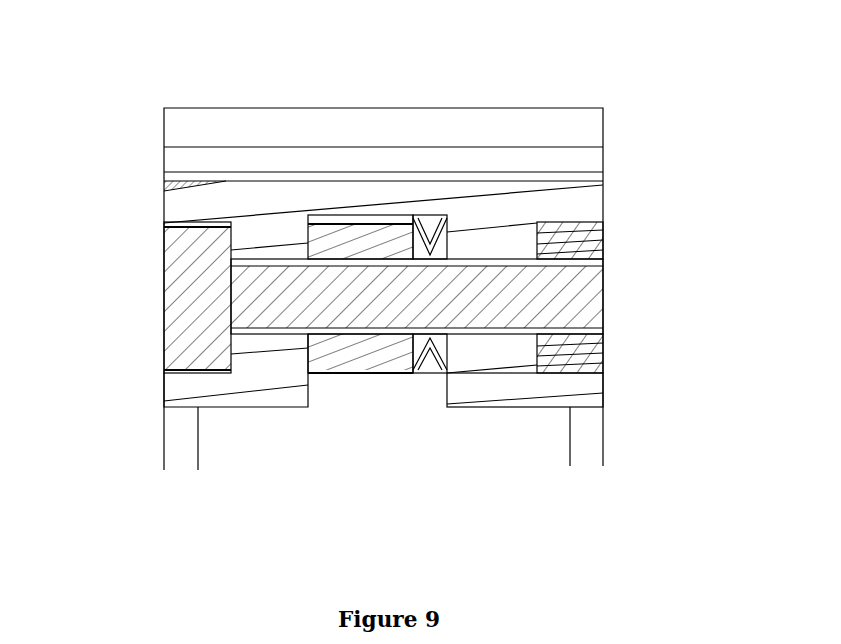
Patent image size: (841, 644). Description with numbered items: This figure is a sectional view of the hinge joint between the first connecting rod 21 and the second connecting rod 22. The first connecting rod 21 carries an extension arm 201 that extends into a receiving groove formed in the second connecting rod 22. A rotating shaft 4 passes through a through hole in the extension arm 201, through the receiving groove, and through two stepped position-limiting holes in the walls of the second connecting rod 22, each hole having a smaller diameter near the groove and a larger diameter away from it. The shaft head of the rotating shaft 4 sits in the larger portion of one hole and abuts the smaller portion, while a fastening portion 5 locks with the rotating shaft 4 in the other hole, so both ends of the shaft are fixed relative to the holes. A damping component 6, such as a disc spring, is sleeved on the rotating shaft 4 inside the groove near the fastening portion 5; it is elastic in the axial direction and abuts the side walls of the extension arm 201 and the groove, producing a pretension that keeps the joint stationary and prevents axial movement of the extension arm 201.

The first connecting rod 21 is at (221, 127).
The rotating shaft 4 is at (188, 299).
The fastening portion 5 is at (603, 240).
The extension arm 201 is at (352, 377).
The damping component 6 is at (436, 380).
The second connecting rod 22 is at (198, 382).